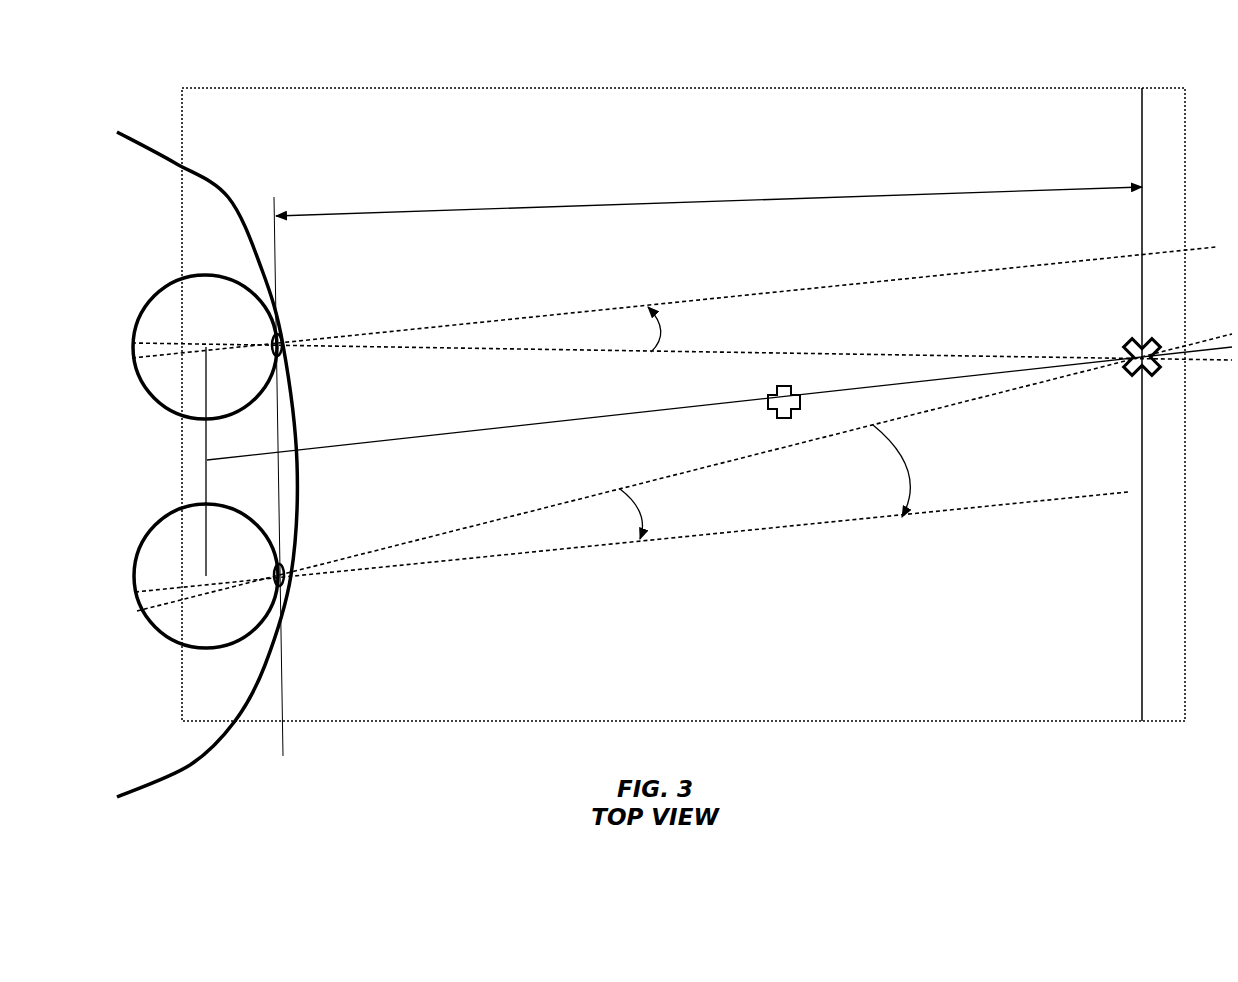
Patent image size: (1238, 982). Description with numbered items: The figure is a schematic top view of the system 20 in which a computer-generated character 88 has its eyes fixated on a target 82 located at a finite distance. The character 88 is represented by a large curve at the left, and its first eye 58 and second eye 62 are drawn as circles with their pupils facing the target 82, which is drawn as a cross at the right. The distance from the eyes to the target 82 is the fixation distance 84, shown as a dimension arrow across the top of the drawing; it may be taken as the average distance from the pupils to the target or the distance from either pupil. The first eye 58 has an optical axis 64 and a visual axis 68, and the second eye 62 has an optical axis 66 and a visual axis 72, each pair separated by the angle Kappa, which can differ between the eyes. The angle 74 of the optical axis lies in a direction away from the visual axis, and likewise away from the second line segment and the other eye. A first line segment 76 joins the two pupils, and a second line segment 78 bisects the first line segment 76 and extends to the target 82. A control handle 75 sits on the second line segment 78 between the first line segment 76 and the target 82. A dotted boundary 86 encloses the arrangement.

The system 20 is at (255, 68).
The first eye 58 is at (140, 382).
The second eye 62 is at (185, 646).
The optical axis 64 is at (748, 298).
The optical axis 66 is at (603, 546).
The visual axis 68 is at (500, 353).
The visual axis 72 is at (785, 448).
The angle 74 is at (893, 446).
The control handle 75 is at (785, 387).
The first line segment 76 is at (207, 482).
The second line segment 78 is at (555, 426).
The target 82 is at (1142, 376).
The fixation distance 84 is at (808, 180).
The display boundary 86 is at (1073, 722).
The character 88 is at (196, 170).